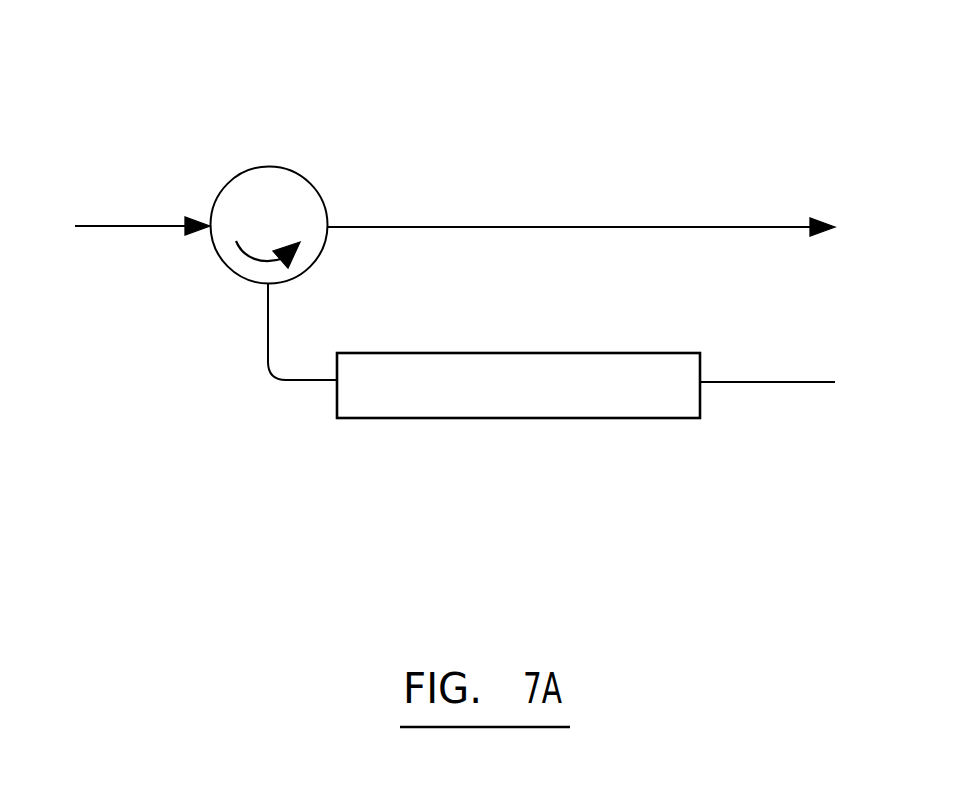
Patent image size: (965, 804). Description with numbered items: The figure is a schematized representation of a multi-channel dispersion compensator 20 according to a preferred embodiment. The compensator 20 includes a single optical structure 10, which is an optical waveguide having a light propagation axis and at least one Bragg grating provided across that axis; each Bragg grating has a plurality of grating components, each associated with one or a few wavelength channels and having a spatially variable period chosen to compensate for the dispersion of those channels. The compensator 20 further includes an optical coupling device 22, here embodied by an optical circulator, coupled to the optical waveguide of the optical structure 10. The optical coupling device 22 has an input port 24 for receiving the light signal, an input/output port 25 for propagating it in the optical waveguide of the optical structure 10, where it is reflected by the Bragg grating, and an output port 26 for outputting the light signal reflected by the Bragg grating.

The multi-channel dispersion compensator 20 is at (579, 130).
The optical coupling device 22 is at (305, 218).
The input port 24 is at (209, 236).
The input/output port 25 is at (266, 289).
The output port 26 is at (329, 229).
The optical structure 10 is at (683, 405).